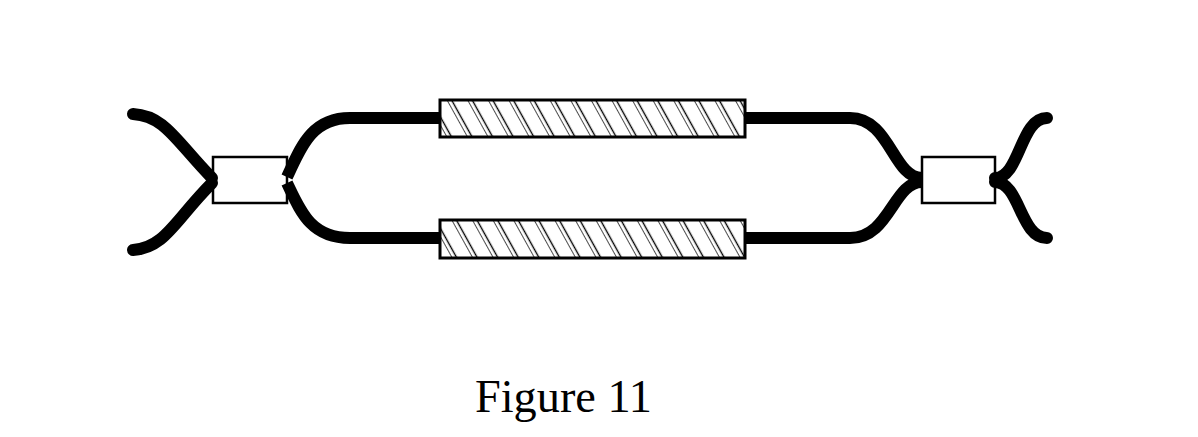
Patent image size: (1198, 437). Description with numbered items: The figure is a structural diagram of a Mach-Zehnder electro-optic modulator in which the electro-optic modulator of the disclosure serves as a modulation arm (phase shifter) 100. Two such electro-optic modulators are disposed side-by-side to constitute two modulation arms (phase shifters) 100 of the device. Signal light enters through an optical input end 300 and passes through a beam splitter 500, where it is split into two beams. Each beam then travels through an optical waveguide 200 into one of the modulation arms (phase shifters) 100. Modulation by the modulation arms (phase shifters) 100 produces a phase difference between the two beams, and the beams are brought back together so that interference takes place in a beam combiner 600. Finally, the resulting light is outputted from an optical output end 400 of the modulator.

The modulation arm (phase shifter) 100 is at (540, 108).
The optical waveguide 200 is at (340, 112).
The optical input end 300 is at (160, 112).
The optical output end 400 is at (1010, 128).
The beam splitter 500 is at (240, 193).
The beam combiner 600 is at (952, 193).